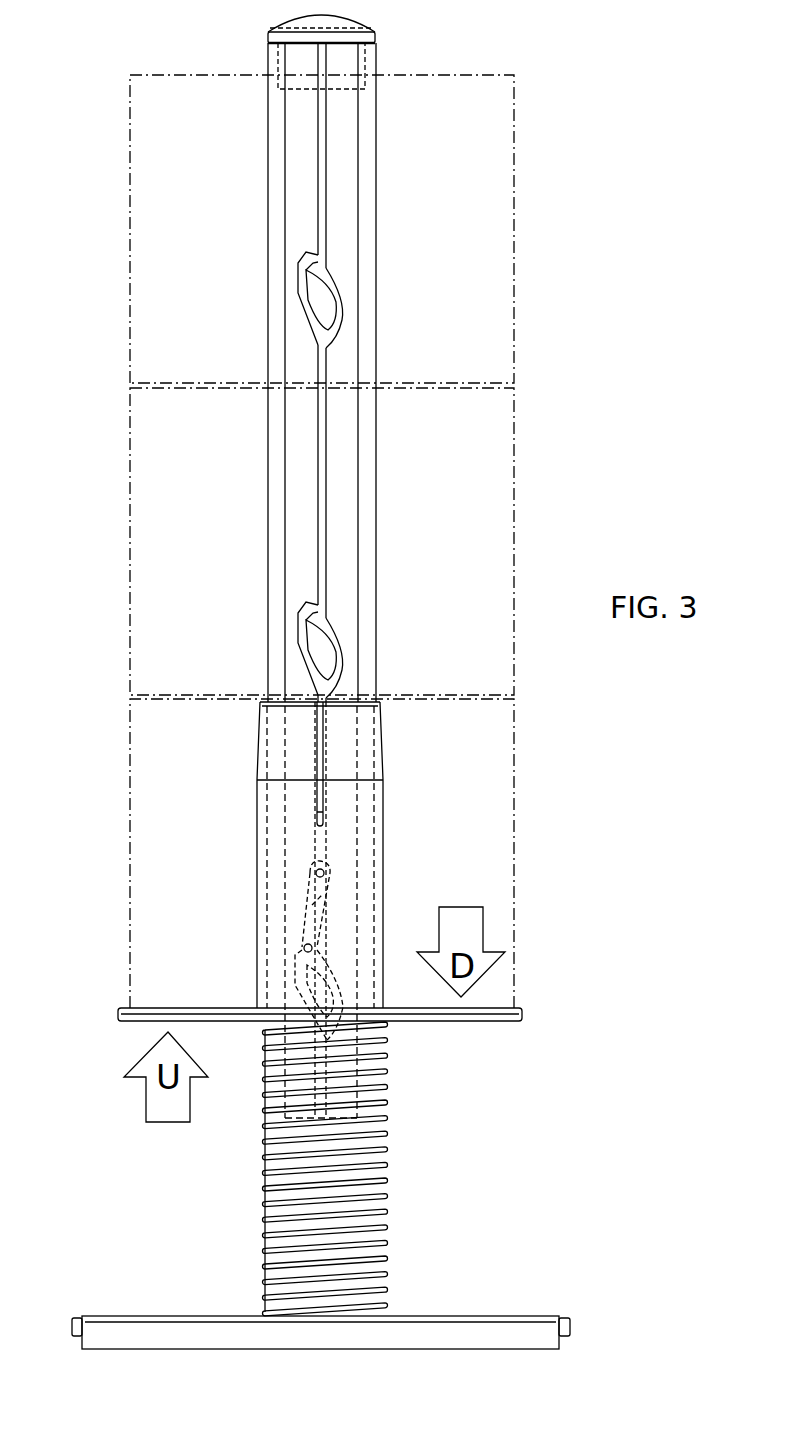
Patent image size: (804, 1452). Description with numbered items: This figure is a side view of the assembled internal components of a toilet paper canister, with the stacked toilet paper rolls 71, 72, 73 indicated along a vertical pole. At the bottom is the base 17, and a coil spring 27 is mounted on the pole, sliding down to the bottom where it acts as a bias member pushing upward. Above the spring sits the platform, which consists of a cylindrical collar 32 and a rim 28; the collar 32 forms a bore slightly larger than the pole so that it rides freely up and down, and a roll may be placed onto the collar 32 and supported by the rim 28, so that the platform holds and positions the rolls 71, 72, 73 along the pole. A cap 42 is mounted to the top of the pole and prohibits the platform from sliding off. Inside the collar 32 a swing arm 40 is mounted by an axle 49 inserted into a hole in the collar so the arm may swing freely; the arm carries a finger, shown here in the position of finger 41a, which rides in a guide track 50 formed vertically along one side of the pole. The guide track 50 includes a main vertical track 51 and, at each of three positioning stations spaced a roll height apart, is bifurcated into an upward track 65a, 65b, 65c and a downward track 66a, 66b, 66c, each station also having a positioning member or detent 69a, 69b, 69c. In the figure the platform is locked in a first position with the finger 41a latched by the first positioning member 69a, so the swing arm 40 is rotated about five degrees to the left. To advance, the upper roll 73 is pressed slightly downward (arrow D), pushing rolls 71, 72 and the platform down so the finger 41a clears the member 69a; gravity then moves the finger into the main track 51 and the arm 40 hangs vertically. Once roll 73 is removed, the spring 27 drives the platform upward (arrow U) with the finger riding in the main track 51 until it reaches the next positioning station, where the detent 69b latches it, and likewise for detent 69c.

The base 17 is at (520, 1336).
The coil spring 27 is at (380, 1072).
The rim 28 is at (522, 1014).
The collar 32 is at (383, 821).
The swing arm 40 is at (330, 895).
The finger 41a is at (317, 947).
The cap 42 is at (300, 22).
The axle 49 is at (316, 873).
The guide track 50 is at (326, 482).
The main vertical track 51 is at (330, 160).
The upward track 65a is at (300, 993).
The upward track 65b is at (305, 648).
The upward track 65c is at (310, 316).
The downward track 66a is at (340, 985).
The downward track 66b is at (340, 650).
The downward track 66c is at (338, 305).
The detent 69a is at (292, 955).
The detent 69b is at (312, 605).
The detent 69c is at (312, 255).
The toilet paper roll 71 is at (130, 765).
The toilet paper roll 72 is at (130, 456).
The toilet paper roll 73 is at (130, 130).